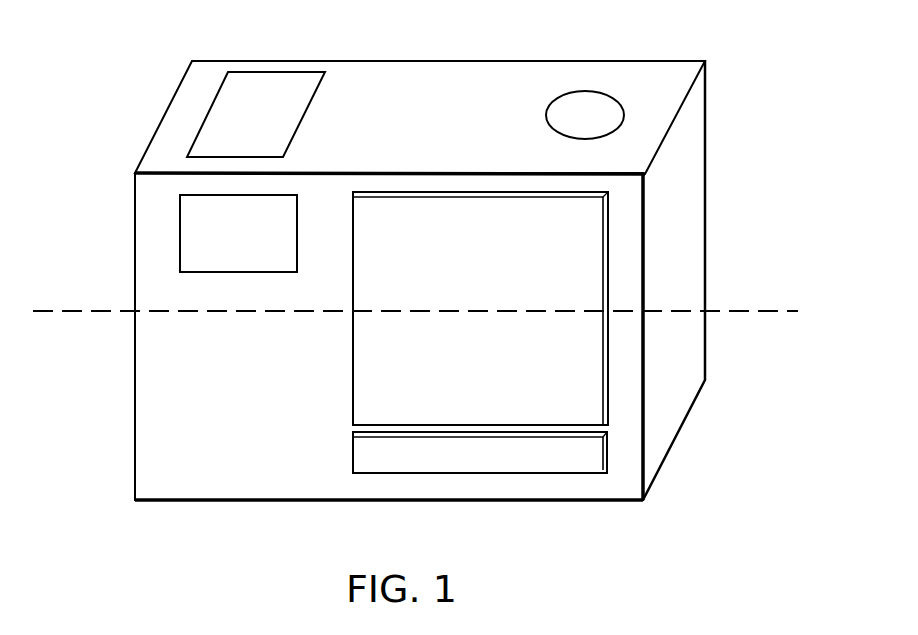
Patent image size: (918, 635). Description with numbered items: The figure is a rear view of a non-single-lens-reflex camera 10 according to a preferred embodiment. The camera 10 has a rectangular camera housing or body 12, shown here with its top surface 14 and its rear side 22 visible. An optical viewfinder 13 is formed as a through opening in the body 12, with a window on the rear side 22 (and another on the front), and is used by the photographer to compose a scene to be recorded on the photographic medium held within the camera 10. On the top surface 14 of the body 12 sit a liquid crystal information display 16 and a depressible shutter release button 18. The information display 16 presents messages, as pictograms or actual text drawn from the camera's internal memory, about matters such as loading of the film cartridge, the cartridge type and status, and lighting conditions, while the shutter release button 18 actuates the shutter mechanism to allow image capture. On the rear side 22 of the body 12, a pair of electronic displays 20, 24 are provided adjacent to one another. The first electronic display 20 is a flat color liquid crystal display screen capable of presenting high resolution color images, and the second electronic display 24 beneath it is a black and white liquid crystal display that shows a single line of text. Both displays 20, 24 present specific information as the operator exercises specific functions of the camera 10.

The camera 10 is at (33, 311).
The camera body 12 is at (696, 500).
The optical viewfinder 13 is at (180, 253).
The top surface 14 is at (450, 108).
The liquid crystal information display 16 is at (287, 83).
The depressible shutter release button 18 is at (590, 91).
The first electronic display 20 is at (367, 368).
The rear side 22 is at (134, 421).
The second electronic display 24 is at (593, 467).